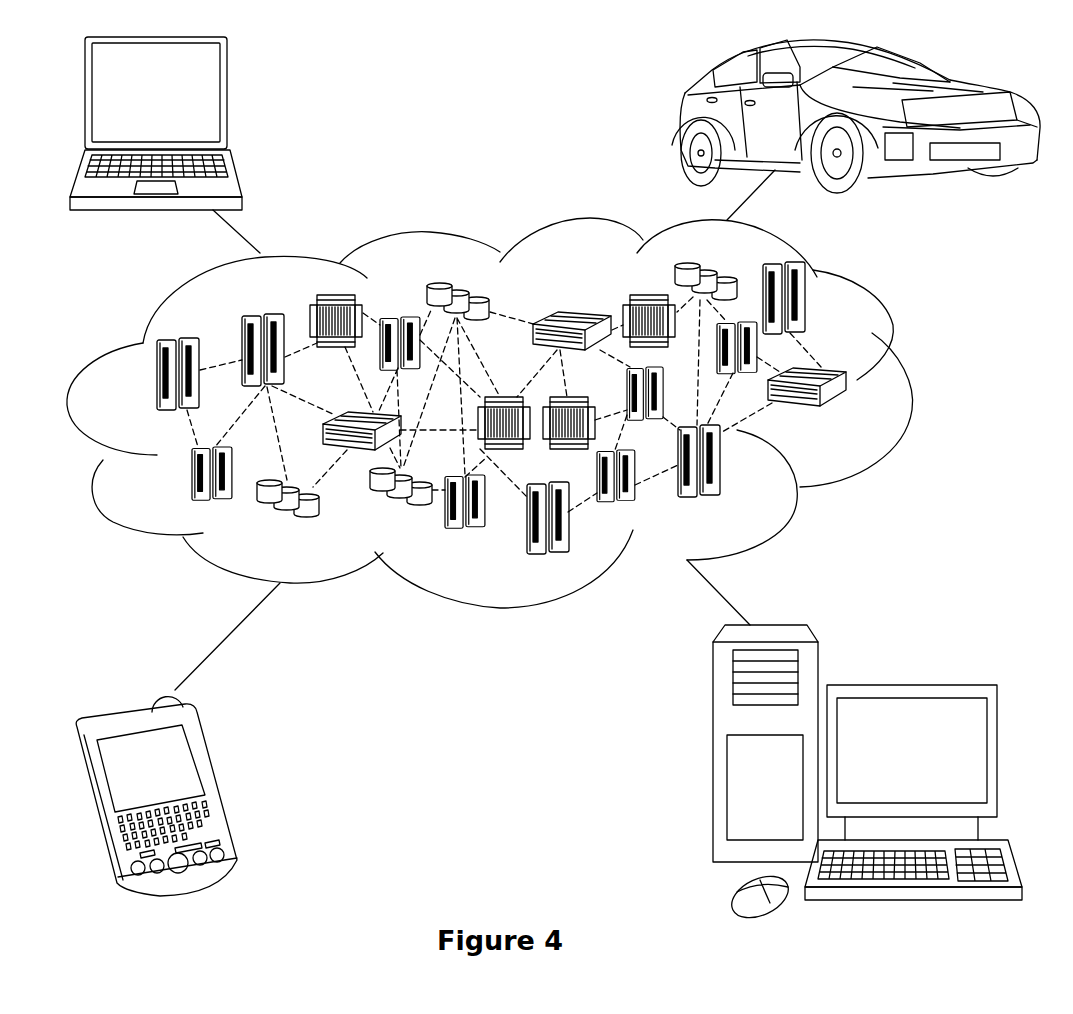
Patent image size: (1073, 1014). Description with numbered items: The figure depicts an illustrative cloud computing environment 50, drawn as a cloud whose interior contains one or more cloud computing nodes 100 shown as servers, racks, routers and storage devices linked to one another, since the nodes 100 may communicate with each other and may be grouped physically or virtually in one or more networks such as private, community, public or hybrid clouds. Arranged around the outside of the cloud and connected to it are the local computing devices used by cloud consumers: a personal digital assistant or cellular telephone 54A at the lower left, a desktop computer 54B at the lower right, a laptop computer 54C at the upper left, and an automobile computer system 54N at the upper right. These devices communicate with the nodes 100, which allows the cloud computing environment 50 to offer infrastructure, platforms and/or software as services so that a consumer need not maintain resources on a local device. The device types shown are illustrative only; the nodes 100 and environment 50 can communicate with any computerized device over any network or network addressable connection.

The cloud computing environment 50 is at (908, 385).
The cloud computing nodes 100 is at (848, 417).
The personal digital assistant (PDA) or cellular telephone 54A is at (217, 782).
The desktop computer 54B is at (908, 685).
The laptop computer 54C is at (227, 100).
The automobile computer system 54N is at (683, 118).